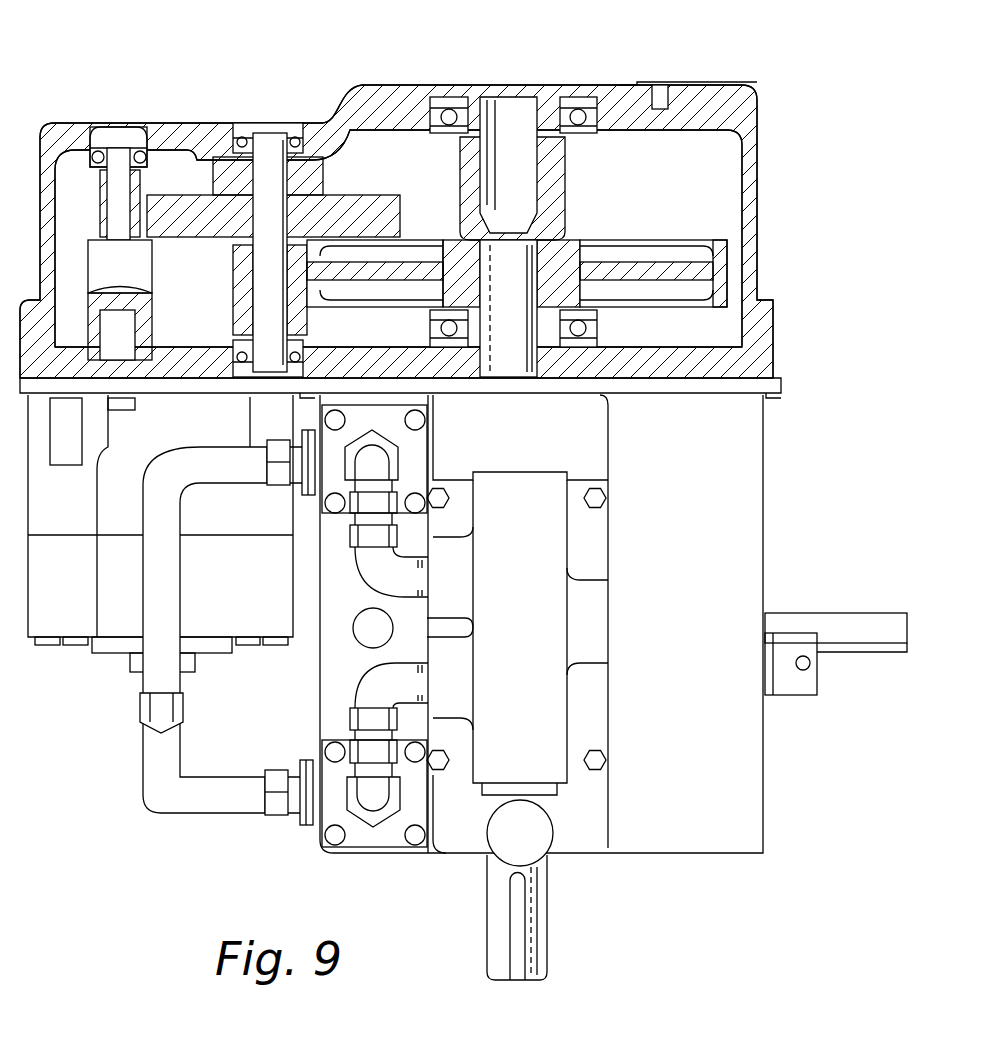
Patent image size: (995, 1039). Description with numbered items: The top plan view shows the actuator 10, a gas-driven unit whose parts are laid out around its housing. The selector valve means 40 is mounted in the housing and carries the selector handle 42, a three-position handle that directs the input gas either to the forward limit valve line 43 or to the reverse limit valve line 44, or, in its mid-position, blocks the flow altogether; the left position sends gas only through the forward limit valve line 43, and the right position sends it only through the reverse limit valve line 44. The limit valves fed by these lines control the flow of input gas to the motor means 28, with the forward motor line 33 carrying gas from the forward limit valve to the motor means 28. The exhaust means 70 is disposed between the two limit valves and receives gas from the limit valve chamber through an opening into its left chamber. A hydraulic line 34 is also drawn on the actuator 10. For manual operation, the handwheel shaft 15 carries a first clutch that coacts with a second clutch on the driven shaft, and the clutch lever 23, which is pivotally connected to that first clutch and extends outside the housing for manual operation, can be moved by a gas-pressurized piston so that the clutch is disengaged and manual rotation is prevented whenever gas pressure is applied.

The actuator 10 is at (700, 76).
The handwheel shaft 15 is at (548, 965).
The clutch lever 23 is at (845, 612).
The motor means 28 is at (40, 652).
The forward motor line 33 is at (163, 596).
The hydraulic line 34 is at (200, 805).
The selector valve means 40 is at (575, 620).
The selector handle 42 is at (548, 858).
The forward limit valve line 43 is at (323, 567).
The reverse limit valve line 44 is at (357, 690).
The exhaust means 70 is at (320, 670).